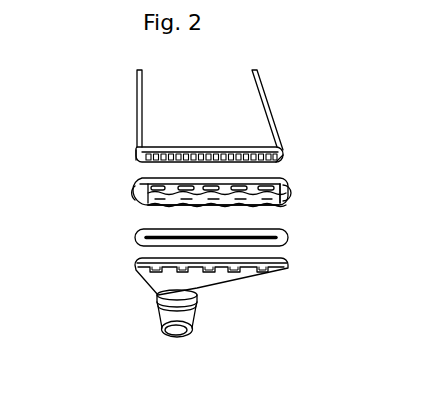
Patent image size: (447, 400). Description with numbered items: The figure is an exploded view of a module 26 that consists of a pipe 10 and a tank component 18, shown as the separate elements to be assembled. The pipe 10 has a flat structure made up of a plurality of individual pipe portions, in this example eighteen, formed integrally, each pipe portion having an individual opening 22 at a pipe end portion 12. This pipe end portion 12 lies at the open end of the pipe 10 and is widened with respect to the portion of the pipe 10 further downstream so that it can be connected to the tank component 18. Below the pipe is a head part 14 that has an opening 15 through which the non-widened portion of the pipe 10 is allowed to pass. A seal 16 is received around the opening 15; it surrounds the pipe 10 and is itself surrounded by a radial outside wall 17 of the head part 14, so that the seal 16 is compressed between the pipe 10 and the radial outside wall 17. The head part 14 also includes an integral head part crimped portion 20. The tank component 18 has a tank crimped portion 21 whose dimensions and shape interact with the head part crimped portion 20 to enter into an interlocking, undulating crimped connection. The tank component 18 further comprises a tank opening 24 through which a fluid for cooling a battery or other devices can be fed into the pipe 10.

The pipe 10 is at (137, 100).
The pipe end portion 12 is at (128, 155).
The head part 14 is at (134, 180).
The opening 15 is at (138, 196).
The seal 16 is at (136, 240).
The radial outside wall 17 is at (288, 194).
The tank component 18 is at (160, 288).
The head part crimped portion 20 is at (134, 214).
The tank crimped portion 21 is at (148, 270).
The individual opening 22 is at (283, 163).
The tank opening 24 is at (188, 335).
The module 26 is at (221, 298).